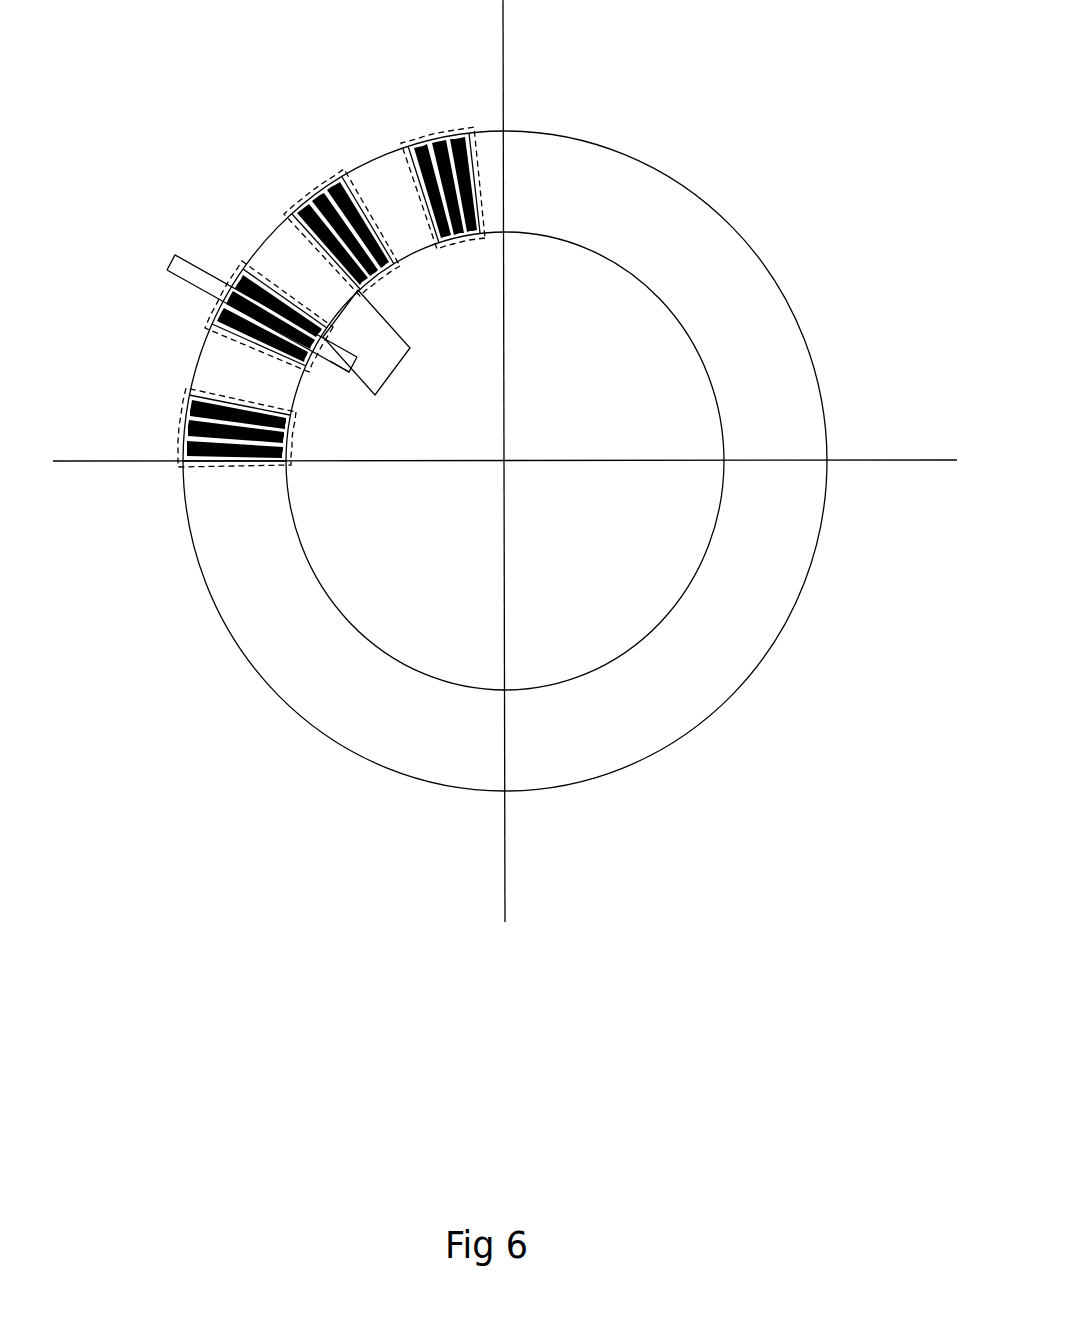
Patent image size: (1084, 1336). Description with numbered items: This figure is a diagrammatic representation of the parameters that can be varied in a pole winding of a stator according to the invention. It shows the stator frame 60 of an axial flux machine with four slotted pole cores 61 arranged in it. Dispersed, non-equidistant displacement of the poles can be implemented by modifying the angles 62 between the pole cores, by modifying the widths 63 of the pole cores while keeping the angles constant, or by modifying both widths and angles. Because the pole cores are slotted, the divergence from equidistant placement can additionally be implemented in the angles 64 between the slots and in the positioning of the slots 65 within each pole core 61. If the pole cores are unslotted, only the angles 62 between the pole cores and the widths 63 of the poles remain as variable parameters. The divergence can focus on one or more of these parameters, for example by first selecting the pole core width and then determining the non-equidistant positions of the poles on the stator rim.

The stator frame 60 is at (505, 403).
The slotted pole core 61 is at (434, 161).
The angle between the pole cores 62 is at (385, 355).
The width of the pole core 63 is at (358, 405).
The angle between the slots 64 is at (232, 295).
The slot 65 is at (318, 226).